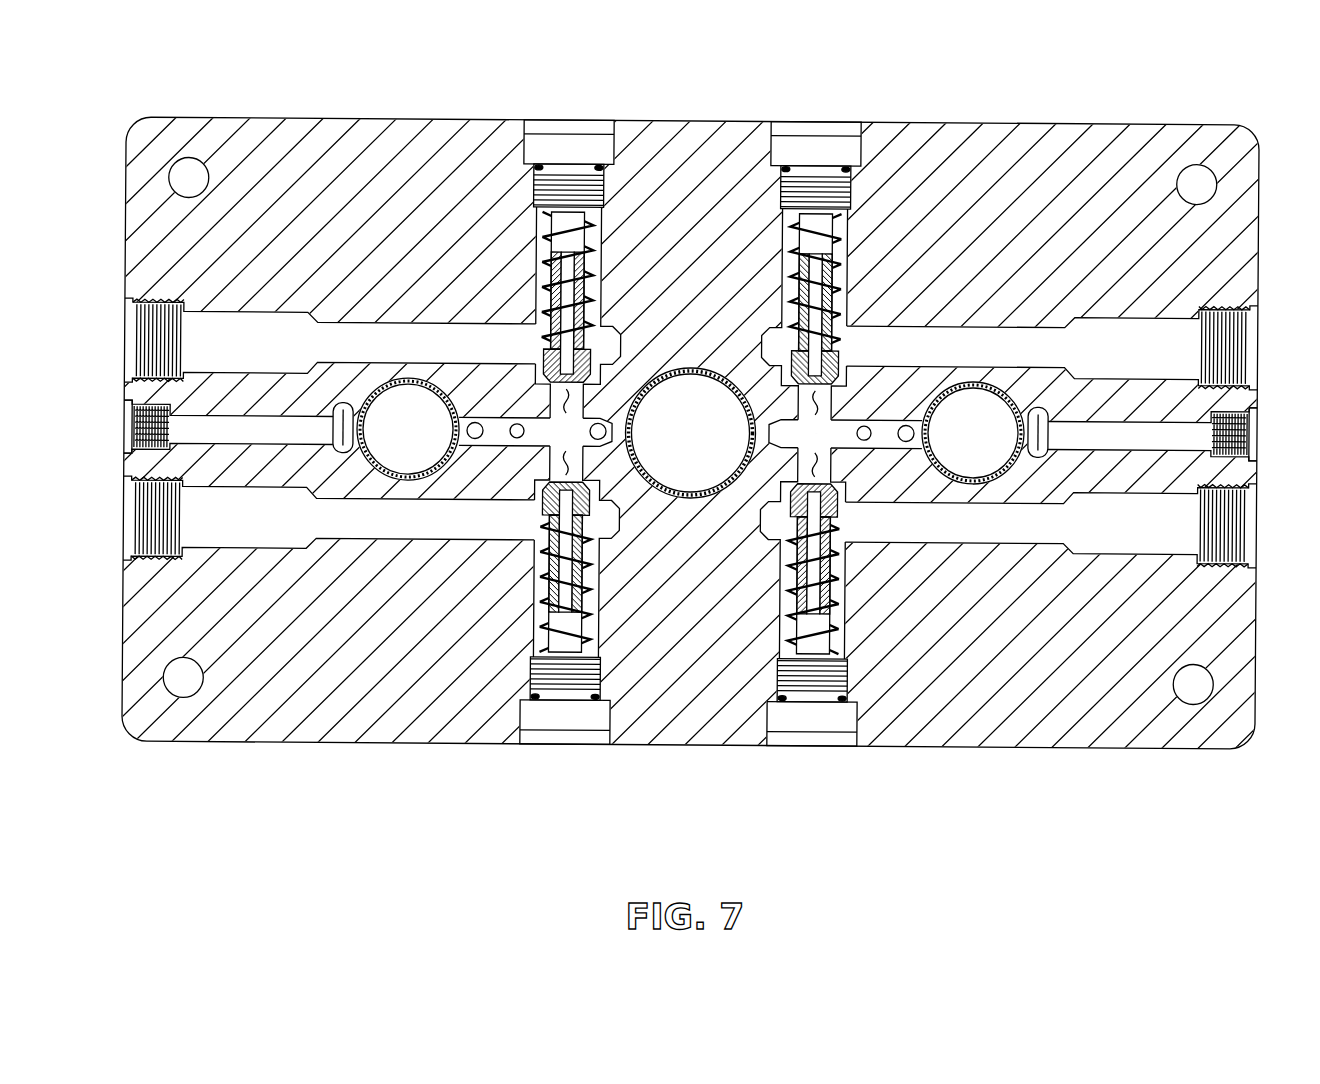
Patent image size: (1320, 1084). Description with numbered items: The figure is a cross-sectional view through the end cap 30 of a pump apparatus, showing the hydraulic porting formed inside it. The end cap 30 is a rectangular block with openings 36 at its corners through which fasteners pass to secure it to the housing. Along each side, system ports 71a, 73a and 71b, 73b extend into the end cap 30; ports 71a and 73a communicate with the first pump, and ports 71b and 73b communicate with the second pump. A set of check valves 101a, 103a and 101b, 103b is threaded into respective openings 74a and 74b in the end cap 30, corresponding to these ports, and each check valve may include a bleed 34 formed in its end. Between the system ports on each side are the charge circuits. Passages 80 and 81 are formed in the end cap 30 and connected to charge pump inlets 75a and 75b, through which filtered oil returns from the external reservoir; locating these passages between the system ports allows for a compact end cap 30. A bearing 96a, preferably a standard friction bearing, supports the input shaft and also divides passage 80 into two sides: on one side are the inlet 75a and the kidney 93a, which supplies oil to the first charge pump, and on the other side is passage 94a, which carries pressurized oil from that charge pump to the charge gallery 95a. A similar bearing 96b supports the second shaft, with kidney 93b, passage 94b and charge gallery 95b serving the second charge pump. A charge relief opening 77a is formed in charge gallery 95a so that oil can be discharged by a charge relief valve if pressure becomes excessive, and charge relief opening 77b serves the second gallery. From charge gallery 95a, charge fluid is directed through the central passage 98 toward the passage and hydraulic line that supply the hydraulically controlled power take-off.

The end cap 30 is at (347, 121).
The bleed 34 is at (689, 433).
The openings 36 is at (187, 181).
The system port 71a is at (218, 536).
The system port 71b is at (1115, 536).
The system port 73a is at (218, 361).
The system port 73b is at (1115, 361).
The opening 74a is at (601, 369).
The opening 74b is at (781, 370).
The charge pump inlet 75a is at (126, 434).
The charge pump inlet 75b is at (1257, 437).
The charge relief opening 77a is at (482, 478).
The charge relief opening 77b is at (898, 481).
The passage 80 is at (203, 427).
The passage 81 is at (1248, 415).
The kidney 93a is at (369, 468).
The kidney 93b is at (1010, 472).
The passage 94a is at (452, 384).
The passage 94b is at (928, 387).
The charge gallery 95a is at (461, 263).
The charge gallery 95b is at (922, 266).
The bearing 96a is at (383, 404).
The bearing 96b is at (998, 409).
The passage 98 is at (605, 437).
The check valve 101a is at (543, 719).
The check valve 101b is at (835, 721).
The check valve 103a is at (548, 145).
The check valve 103b is at (838, 147).